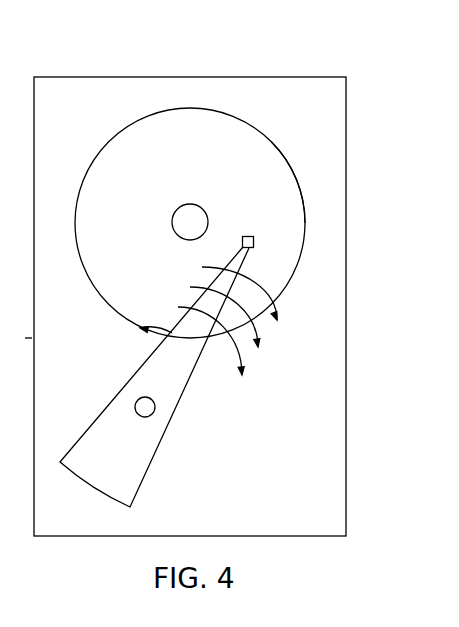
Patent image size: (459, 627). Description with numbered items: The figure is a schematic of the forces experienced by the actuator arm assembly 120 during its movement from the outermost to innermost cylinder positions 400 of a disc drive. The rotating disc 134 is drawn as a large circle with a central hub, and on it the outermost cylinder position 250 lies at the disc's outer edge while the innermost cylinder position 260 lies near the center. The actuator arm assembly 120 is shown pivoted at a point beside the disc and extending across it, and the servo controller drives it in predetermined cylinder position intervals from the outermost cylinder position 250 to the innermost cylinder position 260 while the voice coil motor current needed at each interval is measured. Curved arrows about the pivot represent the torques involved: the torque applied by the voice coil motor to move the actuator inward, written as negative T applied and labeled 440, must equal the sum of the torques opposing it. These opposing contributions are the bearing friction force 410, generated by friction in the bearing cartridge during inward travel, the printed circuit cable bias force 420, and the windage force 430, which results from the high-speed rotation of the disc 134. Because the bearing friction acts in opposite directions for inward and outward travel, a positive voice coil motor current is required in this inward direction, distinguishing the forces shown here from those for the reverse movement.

The outermost to innermost cylinder positions movement 400 is at (278, 60).
The rotating disc 134 is at (130, 135).
The outermost cylinder position 250 is at (283, 153).
The innermost cylinder position 260 is at (173, 208).
The actuator arm assembly 120 is at (148, 467).
The applied torque 440 is at (75, 352).
The windage force 430 is at (389, 341).
The printed circuit cable bias force 420 is at (376, 372).
The bearing friction force 410 is at (340, 406).